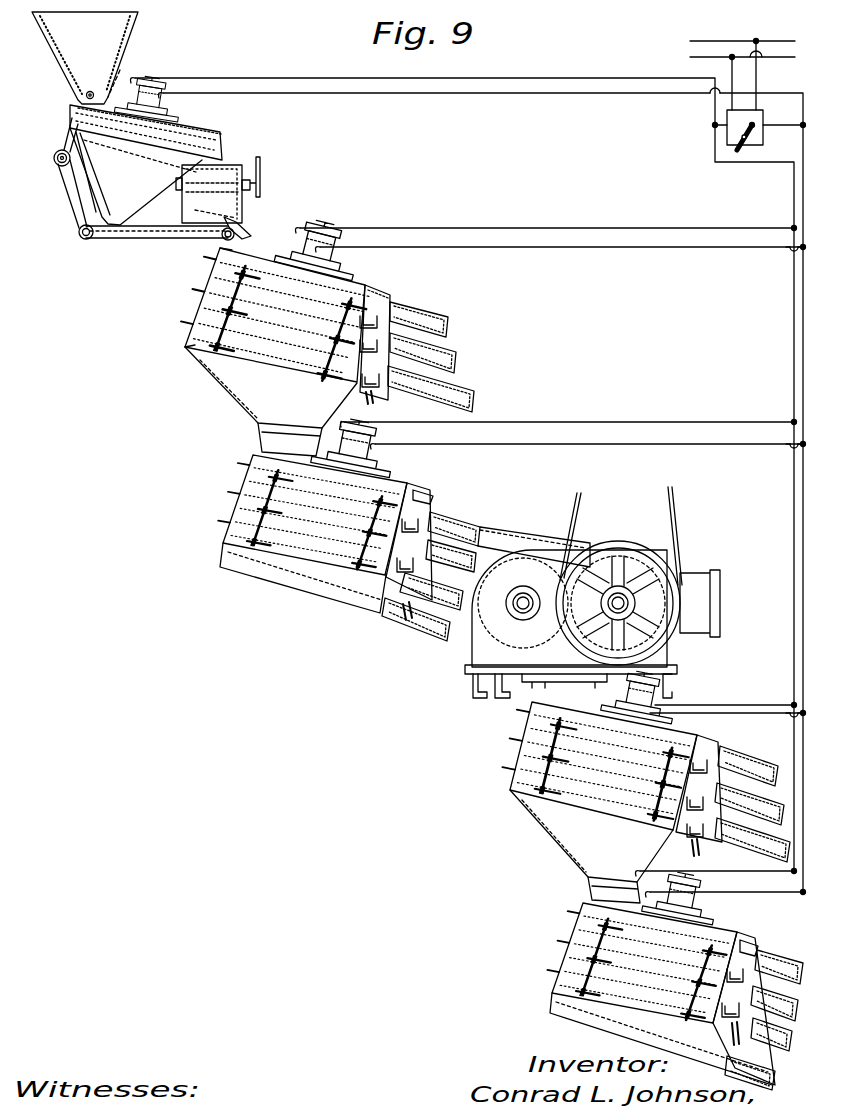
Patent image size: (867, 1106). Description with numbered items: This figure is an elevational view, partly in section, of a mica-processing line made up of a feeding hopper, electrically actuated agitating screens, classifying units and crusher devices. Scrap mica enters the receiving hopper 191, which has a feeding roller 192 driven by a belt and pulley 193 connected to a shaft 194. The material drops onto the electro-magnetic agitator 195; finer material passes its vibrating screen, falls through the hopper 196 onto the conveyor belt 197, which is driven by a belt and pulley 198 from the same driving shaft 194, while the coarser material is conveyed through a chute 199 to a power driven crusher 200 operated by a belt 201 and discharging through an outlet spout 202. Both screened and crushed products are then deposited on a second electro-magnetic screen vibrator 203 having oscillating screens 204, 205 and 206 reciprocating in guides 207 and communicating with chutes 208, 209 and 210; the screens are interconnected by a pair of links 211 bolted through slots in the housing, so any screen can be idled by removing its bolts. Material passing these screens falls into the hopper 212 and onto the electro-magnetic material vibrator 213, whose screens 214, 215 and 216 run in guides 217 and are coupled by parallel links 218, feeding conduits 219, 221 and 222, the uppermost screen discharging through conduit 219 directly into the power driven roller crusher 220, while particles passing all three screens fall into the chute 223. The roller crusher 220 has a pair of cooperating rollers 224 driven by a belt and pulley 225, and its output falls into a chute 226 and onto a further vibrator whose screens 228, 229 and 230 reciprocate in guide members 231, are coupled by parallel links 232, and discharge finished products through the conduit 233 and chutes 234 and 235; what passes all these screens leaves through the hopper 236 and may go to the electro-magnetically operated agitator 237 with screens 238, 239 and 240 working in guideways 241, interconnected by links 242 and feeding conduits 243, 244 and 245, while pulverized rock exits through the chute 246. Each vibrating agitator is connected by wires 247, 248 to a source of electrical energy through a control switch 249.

The receiving hopper 191 is at (85, 58).
The feeding roller 192 is at (120, 70).
The belt and pulley 193 is at (66, 135).
The shaft 194 is at (58, 165).
The electro-magnetic agitator 195 is at (160, 106).
The hopper 196 is at (136, 176).
The conveyor belt 197 is at (116, 243).
The belt and pulley 198 is at (66, 190).
The chute 199 is at (218, 142).
The power driven crusher 200 is at (209, 194).
The belt 201 is at (261, 183).
The outlet spout 202 is at (246, 226).
The second electro-magnetic screen vibrator 203 is at (330, 262).
The oscillating screen 204 is at (378, 306).
The oscillating screen 205 is at (380, 350).
The oscillating screen 206 is at (372, 384).
The guides 207 is at (380, 296).
The conduit or chute 208 is at (436, 315).
The conduit or chute 209 is at (452, 362).
The conduit or chute 210 is at (462, 398).
The links 211 is at (338, 328).
The hopper 212 is at (271, 401).
The electro-magnetic material vibrator 213 is at (372, 456).
The oscillating screen 214 is at (420, 492).
The oscillating screen 215 is at (406, 535).
The oscillating screen 216 is at (402, 576).
The guides 217 is at (412, 515).
The parallel links 218 is at (252, 514).
The conduit 219 is at (475, 517).
The power driven roller crusher 220 is at (575, 555).
The conduit or pipe 221 is at (470, 560).
The conduit or pipe 222 is at (448, 600).
The chute 223 is at (430, 640).
The cooperating rollers 224 is at (545, 630).
The belt and pulley 225 is at (632, 548).
The chute 226 is at (610, 695).
The oscillating screen 228 is at (709, 760).
The oscillating screen 229 is at (709, 797).
The oscillating screen 230 is at (709, 840).
The guide members 231 is at (712, 742).
The parallel links 232 is at (524, 768).
The conduit 233 is at (746, 762).
The chute 234 is at (749, 804).
The chute 235 is at (752, 840).
The hopper 236 is at (591, 846).
The electro-magnetically operated agitator 237 is at (695, 905).
The oscillating screen 238 is at (742, 940).
The oscillating screen 239 is at (728, 984).
The oscillating screen 240 is at (739, 1024).
The guideways 241 is at (752, 940).
The links 242 is at (558, 965).
The conduit 243 is at (779, 967).
The conduit 244 is at (774, 1003).
The conduit 245 is at (771, 1034).
The chute 246 is at (752, 1070).
The wire 247 is at (496, 85).
The wire 248 is at (503, 93).
The control switch 249 is at (727, 140).